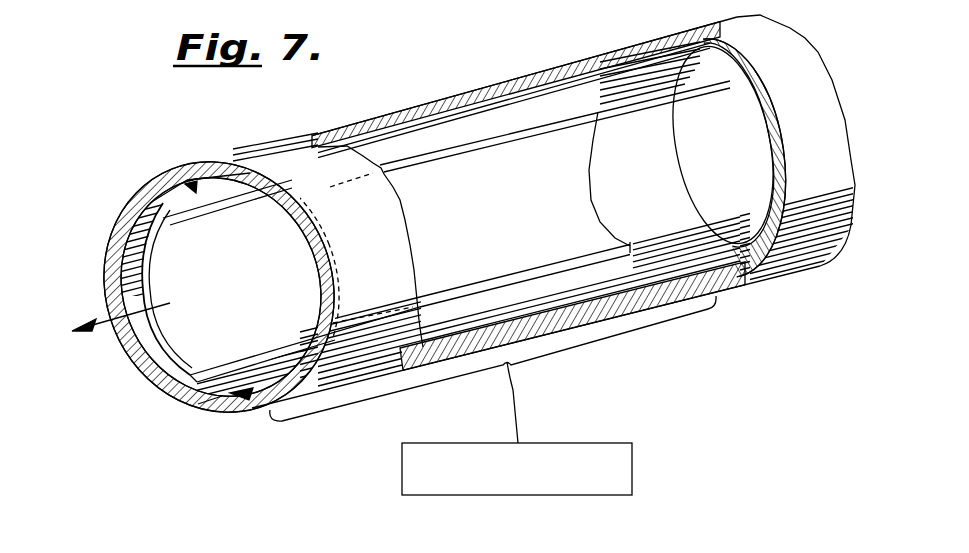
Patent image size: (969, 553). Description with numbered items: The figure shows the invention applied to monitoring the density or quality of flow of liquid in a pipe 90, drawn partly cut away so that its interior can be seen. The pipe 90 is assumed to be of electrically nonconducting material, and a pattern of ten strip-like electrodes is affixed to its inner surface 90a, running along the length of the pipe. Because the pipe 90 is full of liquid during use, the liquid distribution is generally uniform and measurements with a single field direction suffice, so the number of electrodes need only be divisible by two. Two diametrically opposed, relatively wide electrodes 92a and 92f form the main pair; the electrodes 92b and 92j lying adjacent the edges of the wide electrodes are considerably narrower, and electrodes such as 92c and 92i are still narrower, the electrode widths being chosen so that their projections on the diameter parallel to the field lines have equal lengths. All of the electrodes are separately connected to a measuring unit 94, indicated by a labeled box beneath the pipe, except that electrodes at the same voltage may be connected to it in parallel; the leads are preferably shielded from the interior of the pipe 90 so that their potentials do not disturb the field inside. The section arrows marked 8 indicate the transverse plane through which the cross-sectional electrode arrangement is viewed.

The pipe 90 is at (495, 214).
The inner surface 90a is at (132, 252).
The electrode 92a is at (150, 340).
The electrode 92b is at (147, 207).
The electrode 92c is at (446, 134).
The electrode 92f is at (327, 227).
The electrode 92i is at (238, 412).
The electrode 92j is at (197, 405).
The measuring unit 94 is at (632, 470).
The section line 8- 8 is at (267, 117).